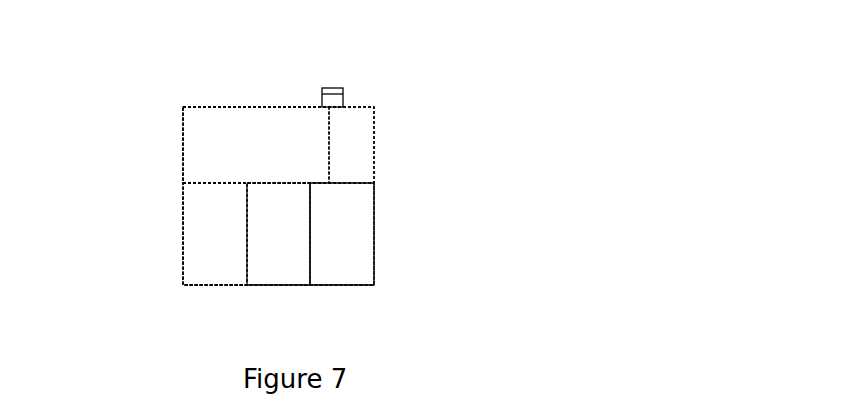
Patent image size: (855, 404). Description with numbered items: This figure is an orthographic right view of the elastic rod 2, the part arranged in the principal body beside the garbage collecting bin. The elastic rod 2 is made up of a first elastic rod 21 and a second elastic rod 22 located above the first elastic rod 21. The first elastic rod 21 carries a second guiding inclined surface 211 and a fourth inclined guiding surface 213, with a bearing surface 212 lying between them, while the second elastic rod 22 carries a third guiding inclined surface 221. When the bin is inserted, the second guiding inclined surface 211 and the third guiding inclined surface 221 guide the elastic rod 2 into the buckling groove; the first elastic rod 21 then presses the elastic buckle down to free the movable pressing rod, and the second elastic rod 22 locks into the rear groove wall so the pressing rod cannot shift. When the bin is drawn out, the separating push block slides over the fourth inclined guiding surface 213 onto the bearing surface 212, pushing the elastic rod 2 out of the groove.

The elastic rod 2 is at (395, 100).
The first elastic rod 21 is at (378, 265).
The second guiding inclined surface 211 is at (209, 233).
The bearing surface 212 is at (283, 239).
The fourth inclined guiding surface 213 is at (341, 244).
The second elastic rod 22 is at (180, 104).
The third guiding inclined surface 221 is at (247, 152).